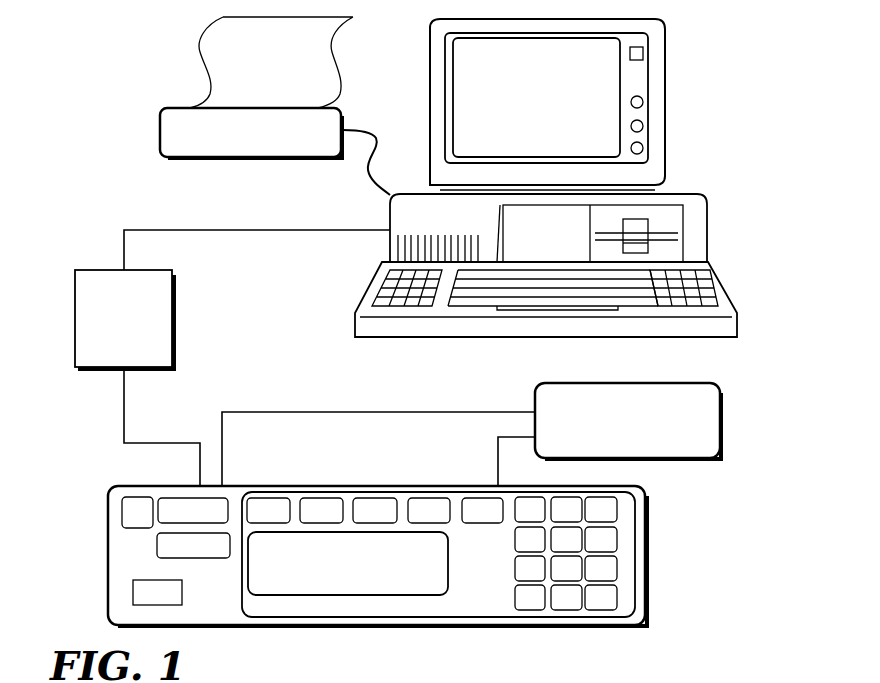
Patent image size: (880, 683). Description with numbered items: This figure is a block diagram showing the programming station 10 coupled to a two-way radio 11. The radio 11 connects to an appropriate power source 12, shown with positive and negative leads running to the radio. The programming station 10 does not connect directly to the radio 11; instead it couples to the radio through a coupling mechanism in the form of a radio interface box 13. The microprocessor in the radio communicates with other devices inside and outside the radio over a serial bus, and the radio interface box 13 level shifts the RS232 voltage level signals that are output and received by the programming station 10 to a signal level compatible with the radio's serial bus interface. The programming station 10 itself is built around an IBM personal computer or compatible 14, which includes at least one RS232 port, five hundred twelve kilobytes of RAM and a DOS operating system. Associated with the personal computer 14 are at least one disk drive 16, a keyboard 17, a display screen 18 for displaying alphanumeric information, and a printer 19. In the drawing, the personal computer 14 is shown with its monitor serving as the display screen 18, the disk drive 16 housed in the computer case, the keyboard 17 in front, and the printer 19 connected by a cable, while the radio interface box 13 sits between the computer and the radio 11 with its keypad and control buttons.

The programming station 10 is at (351, 538).
The two-way radio 11 is at (359, 485).
The power source 12 is at (629, 383).
The radio interface box 13 is at (176, 320).
The personal computer 14 is at (400, 214).
The disk drive 16 is at (653, 230).
The keyboard 17 is at (717, 297).
The display screen 18 is at (644, 113).
The printer 19 is at (158, 130).